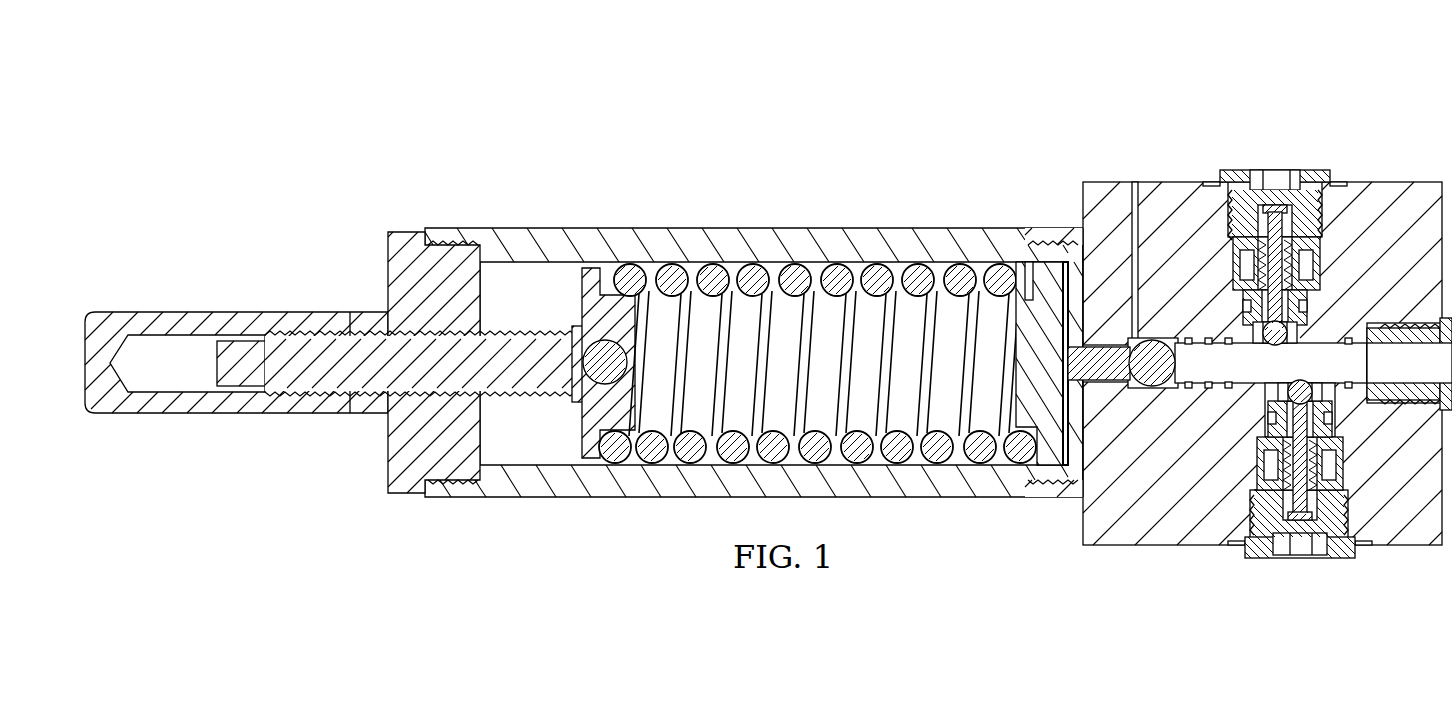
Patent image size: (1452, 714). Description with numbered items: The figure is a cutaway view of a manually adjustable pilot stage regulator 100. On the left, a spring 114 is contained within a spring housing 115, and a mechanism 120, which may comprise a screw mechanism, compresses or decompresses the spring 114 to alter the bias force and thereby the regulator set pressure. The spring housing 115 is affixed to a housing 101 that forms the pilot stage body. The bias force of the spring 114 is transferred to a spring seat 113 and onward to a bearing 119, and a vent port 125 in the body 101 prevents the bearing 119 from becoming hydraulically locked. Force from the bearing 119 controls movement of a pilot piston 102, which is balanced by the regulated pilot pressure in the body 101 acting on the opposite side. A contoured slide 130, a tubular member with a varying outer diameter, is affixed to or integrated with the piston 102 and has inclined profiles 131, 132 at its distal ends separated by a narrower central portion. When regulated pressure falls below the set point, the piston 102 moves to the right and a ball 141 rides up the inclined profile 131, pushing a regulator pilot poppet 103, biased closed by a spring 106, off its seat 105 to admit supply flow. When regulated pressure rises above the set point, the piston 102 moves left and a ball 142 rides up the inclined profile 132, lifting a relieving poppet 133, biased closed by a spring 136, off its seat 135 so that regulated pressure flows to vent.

The pilot stage regulator 100 is at (566, 92).
The housing 101 is at (1385, 190).
The pilot piston 102 is at (1098, 381).
The regulator pilot poppet 103 is at (1270, 215).
The seat 105 is at (1137, 343).
The spring 106 is at (1320, 258).
The spring seat 113 is at (1020, 400).
The spring 114 is at (866, 262).
The housing 115 is at (708, 235).
The bearing 119 is at (1057, 330).
The mechanism 120 is at (522, 332).
The vent port 125 is at (1136, 195).
The contoured slide 130 is at (1250, 385).
The inclined profile 131 is at (1252, 345).
The inclined profile 132 is at (1342, 385).
The relieving poppet 133 is at (1305, 530).
The seat 135 is at (1265, 418).
The spring 136 is at (1342, 475).
The ball 141 is at (1305, 310).
The ball 142 is at (1315, 400).